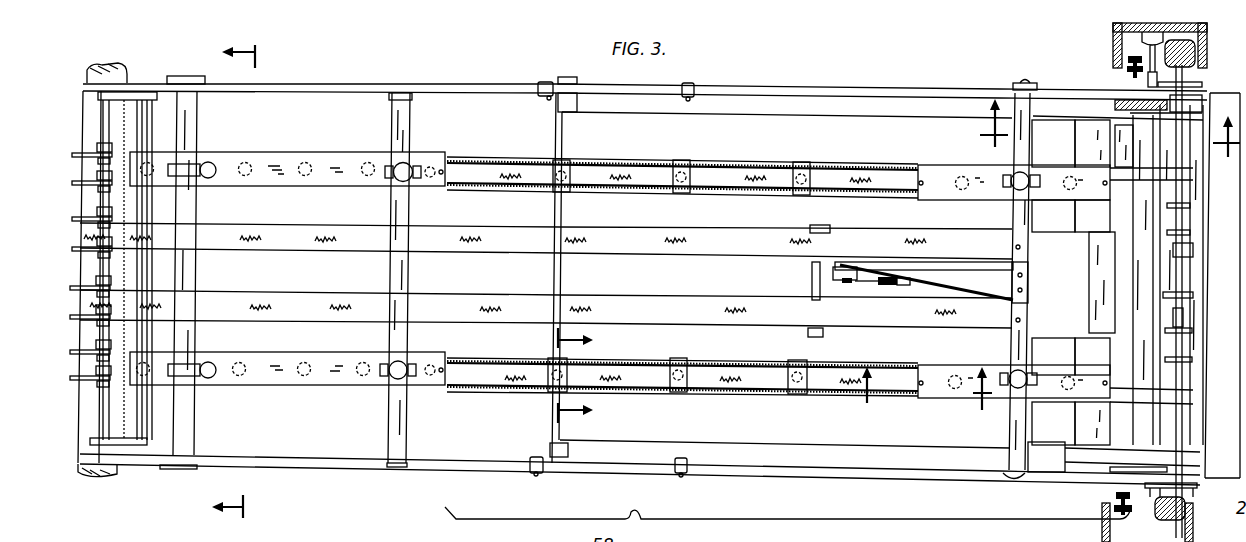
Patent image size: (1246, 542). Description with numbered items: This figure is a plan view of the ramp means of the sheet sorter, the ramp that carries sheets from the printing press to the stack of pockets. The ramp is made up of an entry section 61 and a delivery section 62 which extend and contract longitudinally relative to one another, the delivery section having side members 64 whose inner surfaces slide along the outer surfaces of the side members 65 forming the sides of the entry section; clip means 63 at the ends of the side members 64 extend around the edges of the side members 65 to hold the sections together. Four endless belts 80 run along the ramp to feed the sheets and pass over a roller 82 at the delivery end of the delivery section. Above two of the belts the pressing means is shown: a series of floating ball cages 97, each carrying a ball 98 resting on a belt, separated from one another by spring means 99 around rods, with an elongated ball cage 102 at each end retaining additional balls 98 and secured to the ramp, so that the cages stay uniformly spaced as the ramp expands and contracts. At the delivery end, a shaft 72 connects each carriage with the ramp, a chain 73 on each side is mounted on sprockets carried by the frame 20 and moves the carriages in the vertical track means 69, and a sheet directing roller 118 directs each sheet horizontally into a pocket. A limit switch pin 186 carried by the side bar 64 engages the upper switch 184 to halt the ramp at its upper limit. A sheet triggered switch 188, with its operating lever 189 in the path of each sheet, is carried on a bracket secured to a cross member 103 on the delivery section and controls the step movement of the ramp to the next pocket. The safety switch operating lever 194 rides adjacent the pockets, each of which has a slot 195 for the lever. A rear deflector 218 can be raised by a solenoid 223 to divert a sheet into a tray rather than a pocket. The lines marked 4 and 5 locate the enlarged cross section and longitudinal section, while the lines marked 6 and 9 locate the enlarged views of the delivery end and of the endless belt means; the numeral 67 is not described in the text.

The ramp endless means detail view 9 is at (233, 281).
The delivery end enlarged view 6 is at (1110, 133).
The cross section line 4- 4 is at (575, 376).
The longitudinal section line 5- 5 is at (927, 397).
The frame 20 is at (1113, 45).
The entry section 61 is at (489, 475).
The delivery section 62 is at (878, 508).
The clip means 63 is at (546, 82).
The side members 64 is at (803, 88).
The side members 65 is at (385, 84).
The vertical frame post 67 is at (410, 113).
The vertical track means 69 is at (1210, 40).
The shaft 72 is at (1190, 370).
The chain 73 is at (1147, 86).
The belts 80 is at (474, 165).
The roller 82 is at (1083, 156).
The floating ball cages 97 is at (790, 162).
The ball 98 is at (362, 168).
The spring means 99 is at (617, 163).
The elongated ball cage 102 is at (262, 158).
The cross member 103 is at (1027, 198).
The sheet directing roller 118 is at (1192, 230).
The upper switch 184 is at (1113, 22).
The limit switch pin 186 is at (1125, 60).
The sheet triggered switch 188 is at (835, 278).
The operating lever 189 is at (890, 285).
The operating lever 194 is at (1200, 292).
The slot 195 is at (1229, 265).
The rear deflector 218 is at (1118, 138).
The solenoid 223 is at (1020, 462).